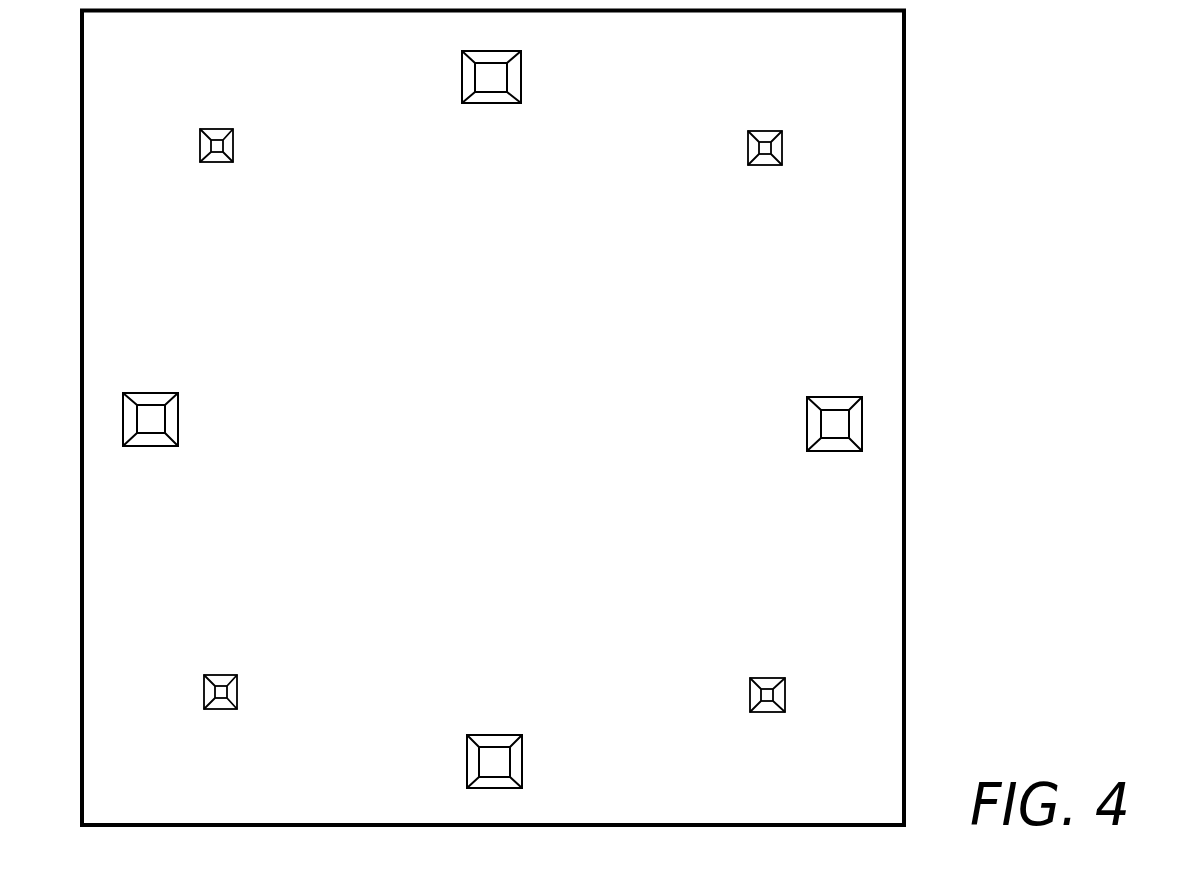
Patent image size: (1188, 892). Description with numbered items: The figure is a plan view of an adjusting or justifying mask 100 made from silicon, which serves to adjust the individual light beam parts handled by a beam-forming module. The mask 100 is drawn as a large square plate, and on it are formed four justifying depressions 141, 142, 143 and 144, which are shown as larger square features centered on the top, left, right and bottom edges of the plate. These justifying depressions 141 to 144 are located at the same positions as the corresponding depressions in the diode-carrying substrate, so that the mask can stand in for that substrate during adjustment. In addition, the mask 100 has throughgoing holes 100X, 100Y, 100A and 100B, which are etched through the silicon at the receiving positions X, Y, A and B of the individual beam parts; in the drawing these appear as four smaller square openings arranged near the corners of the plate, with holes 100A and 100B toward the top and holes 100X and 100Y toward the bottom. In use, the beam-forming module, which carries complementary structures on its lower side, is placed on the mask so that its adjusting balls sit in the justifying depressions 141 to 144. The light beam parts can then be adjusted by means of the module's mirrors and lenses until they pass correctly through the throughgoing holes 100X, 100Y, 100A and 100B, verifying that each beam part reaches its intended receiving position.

The adjusting or justifying mask 100 is at (1000, 215).
The throughgoing hole 100A is at (234, 147).
The throughgoing hole 100B is at (751, 146).
The throughgoing hole 100X is at (258, 718).
The throughgoing hole 100Y is at (750, 708).
The justifying depression 141 is at (178, 424).
The justifying depression 142 is at (808, 422).
The justifying depression 143 is at (463, 102).
The justifying depression 144 is at (538, 718).